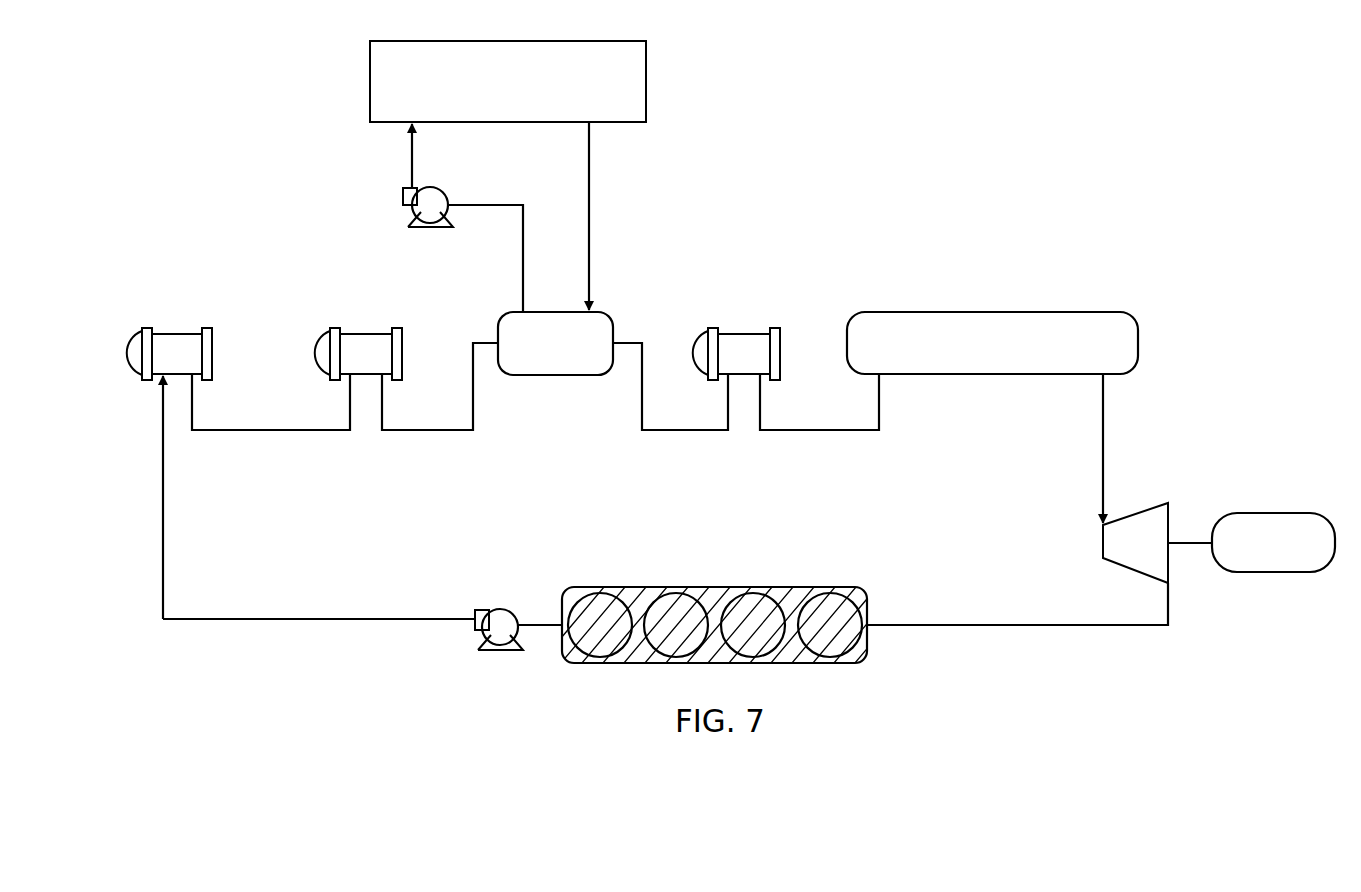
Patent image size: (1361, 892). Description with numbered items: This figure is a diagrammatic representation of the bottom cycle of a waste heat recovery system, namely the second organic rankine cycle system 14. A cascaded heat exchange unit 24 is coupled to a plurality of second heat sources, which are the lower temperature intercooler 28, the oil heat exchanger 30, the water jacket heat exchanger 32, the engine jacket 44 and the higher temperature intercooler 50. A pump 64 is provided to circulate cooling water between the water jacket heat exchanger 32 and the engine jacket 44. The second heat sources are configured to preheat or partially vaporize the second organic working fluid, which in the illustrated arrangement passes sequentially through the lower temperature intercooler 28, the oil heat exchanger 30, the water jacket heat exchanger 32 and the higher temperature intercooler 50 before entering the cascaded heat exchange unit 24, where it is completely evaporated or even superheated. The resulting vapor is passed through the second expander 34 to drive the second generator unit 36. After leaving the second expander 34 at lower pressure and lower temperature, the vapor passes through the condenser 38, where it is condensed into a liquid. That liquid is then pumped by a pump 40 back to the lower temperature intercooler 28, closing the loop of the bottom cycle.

The second organic rankine cycle system 14 is at (855, 267).
The cascaded heat exchange unit 24 is at (993, 311).
The lower temperature intercooler 28 is at (215, 362).
The oil heat exchanger 30 is at (403, 348).
The water jacket heat exchanger 32 is at (540, 310).
The second expander 34 is at (1136, 560).
The second generator unit 36 is at (1275, 512).
The condenser 38 is at (805, 587).
The pump 40 is at (503, 617).
The engine jacket 44 is at (508, 40).
The higher temperature intercooler 50 is at (699, 356).
The pump 64 is at (437, 198).